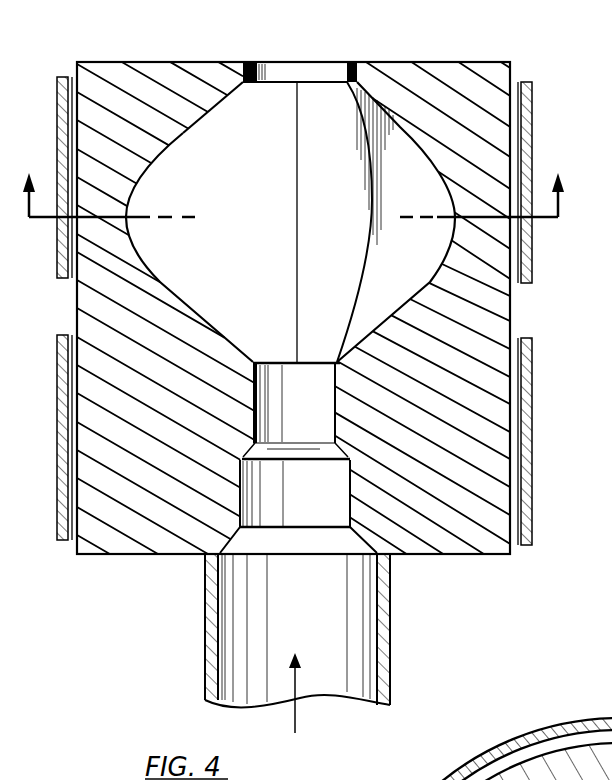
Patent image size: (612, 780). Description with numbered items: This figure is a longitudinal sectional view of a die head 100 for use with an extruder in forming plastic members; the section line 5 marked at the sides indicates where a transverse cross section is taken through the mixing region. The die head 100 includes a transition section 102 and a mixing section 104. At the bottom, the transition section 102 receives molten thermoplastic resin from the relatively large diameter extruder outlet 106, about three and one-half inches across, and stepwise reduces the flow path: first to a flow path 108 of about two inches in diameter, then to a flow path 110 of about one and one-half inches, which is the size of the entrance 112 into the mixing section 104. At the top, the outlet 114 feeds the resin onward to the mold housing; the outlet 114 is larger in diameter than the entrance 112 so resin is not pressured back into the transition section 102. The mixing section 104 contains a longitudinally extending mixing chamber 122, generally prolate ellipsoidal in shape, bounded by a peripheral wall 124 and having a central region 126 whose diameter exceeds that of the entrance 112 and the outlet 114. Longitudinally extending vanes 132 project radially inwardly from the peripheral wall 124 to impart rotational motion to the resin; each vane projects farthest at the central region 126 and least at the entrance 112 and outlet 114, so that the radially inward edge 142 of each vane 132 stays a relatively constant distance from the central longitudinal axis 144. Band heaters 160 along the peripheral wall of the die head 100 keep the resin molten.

The die head 100 is at (307, 377).
The transition section 102 is at (495, 438).
The mixing section 104 is at (485, 150).
The extruder outlet 106 is at (355, 675).
The flow path 108 is at (328, 492).
The flow path 110 is at (313, 405).
The entrance 112 is at (283, 362).
The outlet 114 is at (323, 73).
The mixing chamber 122 is at (352, 95).
The peripheral wall 124 is at (183, 137).
The central region 126 is at (172, 195).
The vane 132 is at (400, 127).
The radially inward edge 142 is at (350, 292).
The central longitudinal axis 144 is at (297, 180).
The band heater 160 is at (532, 105).
The section line 5- 5 is at (293, 182).